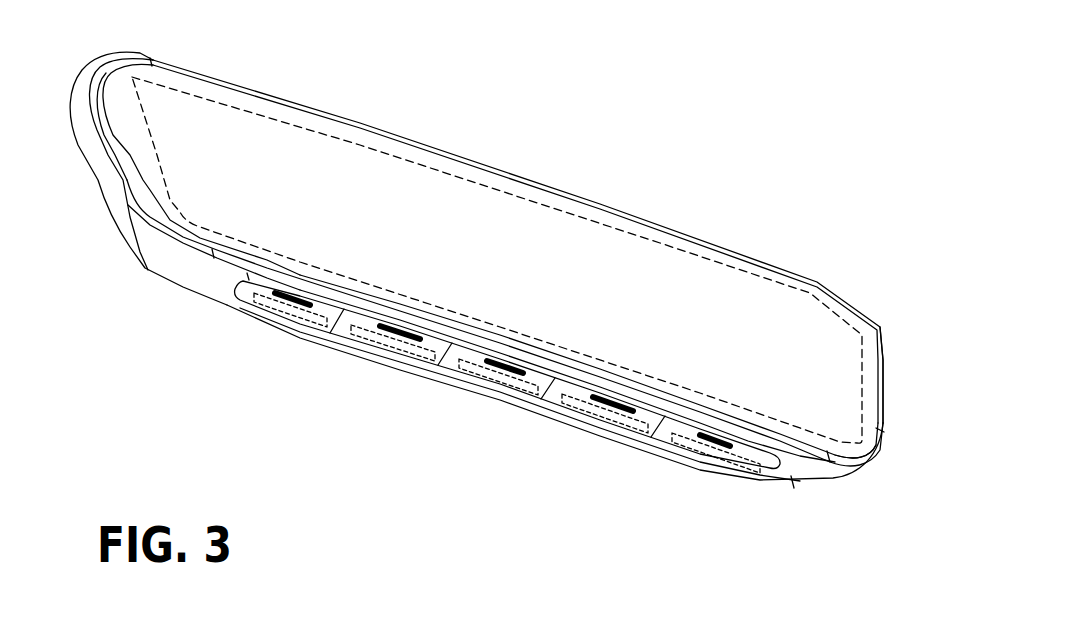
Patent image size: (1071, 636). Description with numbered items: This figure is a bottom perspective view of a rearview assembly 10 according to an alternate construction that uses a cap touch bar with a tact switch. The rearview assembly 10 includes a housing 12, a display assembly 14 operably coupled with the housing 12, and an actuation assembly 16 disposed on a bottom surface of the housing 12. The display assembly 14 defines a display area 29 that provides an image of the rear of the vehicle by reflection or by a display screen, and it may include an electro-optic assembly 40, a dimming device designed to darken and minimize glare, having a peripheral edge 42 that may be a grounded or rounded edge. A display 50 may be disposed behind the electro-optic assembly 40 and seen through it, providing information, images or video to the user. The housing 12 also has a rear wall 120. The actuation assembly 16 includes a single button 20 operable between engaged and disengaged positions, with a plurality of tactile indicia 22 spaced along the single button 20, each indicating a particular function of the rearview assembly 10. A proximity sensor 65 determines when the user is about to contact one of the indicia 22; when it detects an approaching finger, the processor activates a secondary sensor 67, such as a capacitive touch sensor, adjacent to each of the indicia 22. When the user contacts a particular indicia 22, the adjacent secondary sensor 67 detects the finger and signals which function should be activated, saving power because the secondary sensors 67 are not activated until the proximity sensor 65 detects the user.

The rearview assembly 10 is at (741, 193).
The housing 12 is at (793, 478).
The display assembly 14 is at (893, 353).
The actuation assembly 16 is at (247, 277).
The single button 20 is at (463, 373).
The tactile indicia 22 is at (293, 303).
The display area 29 is at (537, 245).
The electro-optic assembly 40 is at (203, 203).
The peripheral edge 42 is at (853, 460).
The display 50 is at (337, 162).
The proximity sensor 65 is at (263, 312).
The secondary sensor 67 is at (272, 296).
The rear wall 120 is at (102, 203).